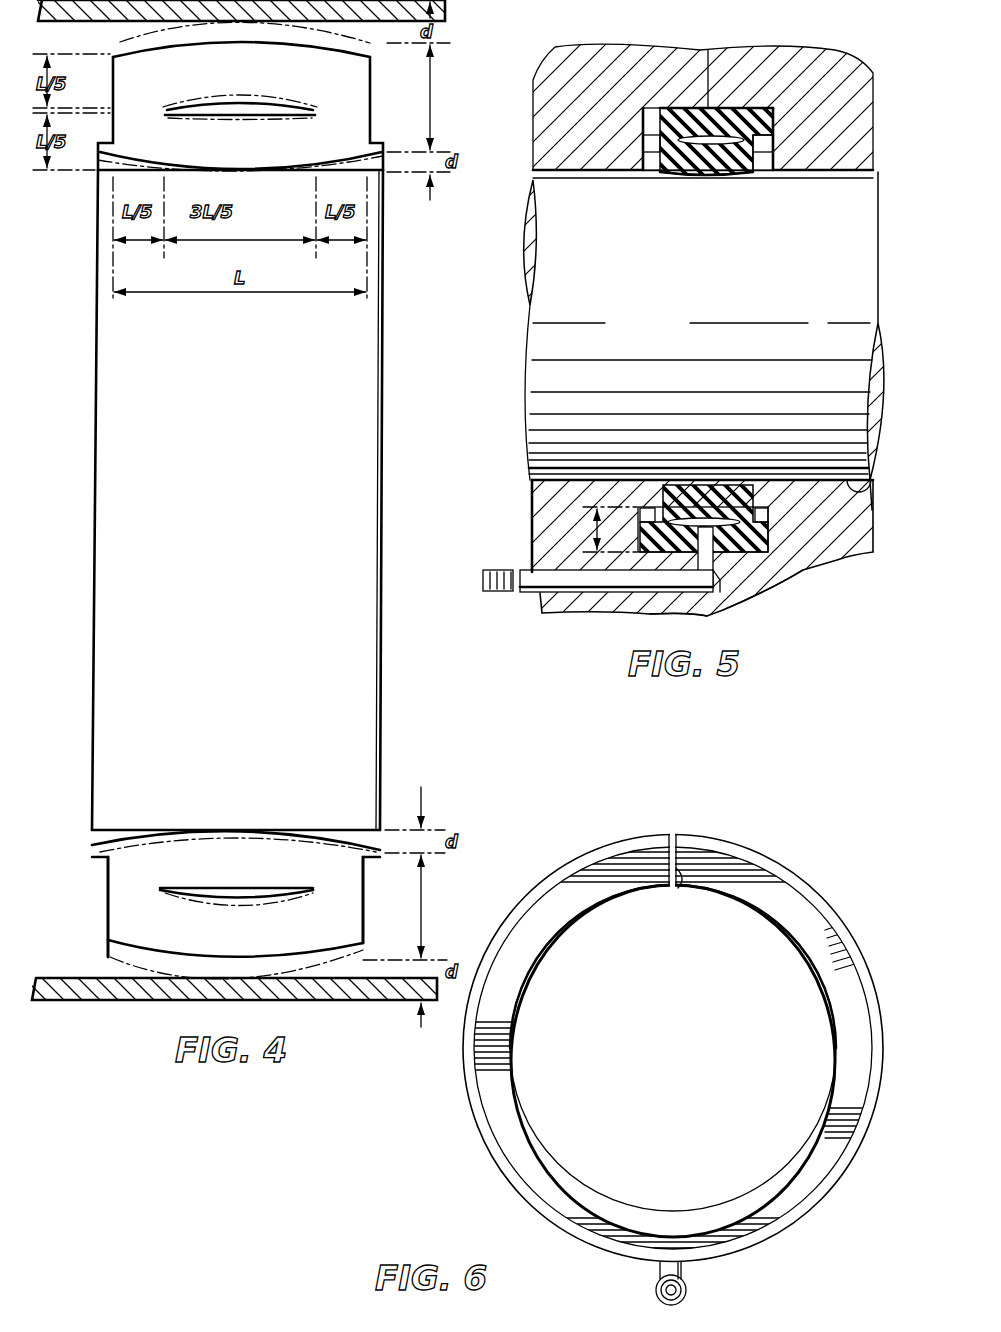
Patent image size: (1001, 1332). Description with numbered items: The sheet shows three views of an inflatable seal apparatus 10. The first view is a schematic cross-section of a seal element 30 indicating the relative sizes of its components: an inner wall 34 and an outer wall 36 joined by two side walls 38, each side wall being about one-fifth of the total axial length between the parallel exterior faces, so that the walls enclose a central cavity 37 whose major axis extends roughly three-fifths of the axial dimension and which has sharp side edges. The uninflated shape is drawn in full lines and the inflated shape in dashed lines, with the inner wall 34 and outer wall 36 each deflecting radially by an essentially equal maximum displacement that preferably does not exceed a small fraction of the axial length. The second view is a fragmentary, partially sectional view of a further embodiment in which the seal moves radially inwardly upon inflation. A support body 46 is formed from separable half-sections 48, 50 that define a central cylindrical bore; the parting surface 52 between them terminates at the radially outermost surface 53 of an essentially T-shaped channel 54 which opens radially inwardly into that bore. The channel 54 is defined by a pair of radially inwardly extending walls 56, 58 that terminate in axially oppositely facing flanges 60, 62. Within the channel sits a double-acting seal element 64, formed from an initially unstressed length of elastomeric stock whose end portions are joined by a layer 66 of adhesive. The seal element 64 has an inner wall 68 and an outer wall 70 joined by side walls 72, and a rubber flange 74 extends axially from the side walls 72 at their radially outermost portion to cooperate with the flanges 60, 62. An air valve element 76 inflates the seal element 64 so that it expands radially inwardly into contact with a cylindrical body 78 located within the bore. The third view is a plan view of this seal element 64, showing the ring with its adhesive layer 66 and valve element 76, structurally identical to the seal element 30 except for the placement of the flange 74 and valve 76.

In FIG. 5, the inflatable seal apparatus 10 is at (698, 342).
In FIG. 4, the seal element 30 is at (234, 499).
In FIG. 4, the inner wall 34 is at (262, 146).
In FIG. 4, the outer wall 36 is at (238, 78).
In FIG. 4, the central cavity 37 is at (215, 892).
In FIG. 4, the side walls 38 is at (112, 902).
In FIG. 5, the support body 46 is at (857, 497).
In FIG. 5, the half-section 48 is at (803, 570).
In FIG. 5, the half-section 50 is at (547, 528).
In FIG. 5, the parting surface 52 is at (717, 617).
In FIG. 5, the radially outermost surface 53 is at (687, 108).
In FIG. 5, the T-shaped channel 54 is at (650, 517).
In FIG. 5, the radially inwardly extending wall 56 is at (643, 110).
In FIG. 5, the radially inwardly extending wall 58 is at (773, 128).
In FIG. 5, the axially facing flange 60 is at (652, 157).
In FIG. 5, the axially facing flange 62 is at (767, 160).
In FIG. 5, the double-acting seal element 64 is at (673, 507).
In FIG. 6, the double-acting seal element 64 is at (770, 1207).
In FIG. 6, the adhesive layer 66 is at (676, 886).
In FIG. 5, the inner wall 68 is at (720, 176).
In FIG. 6, the inner wall 68 is at (788, 933).
In FIG. 5, the outer wall 70 is at (733, 118).
In FIG. 6, the outer wall 70 is at (683, 1069).
In FIG. 5, the side walls 72 is at (773, 147).
In FIG. 6, the side walls 72 is at (843, 980).
In FIG. 5, the rubber flange 74 is at (760, 122).
In FIG. 6, the rubber flange 74 is at (838, 927).
In FIG. 5, the air valve element 76 is at (532, 582).
In FIG. 6, the air valve element 76 is at (686, 1272).
In FIG. 5, the cylindrical body 78 is at (860, 255).